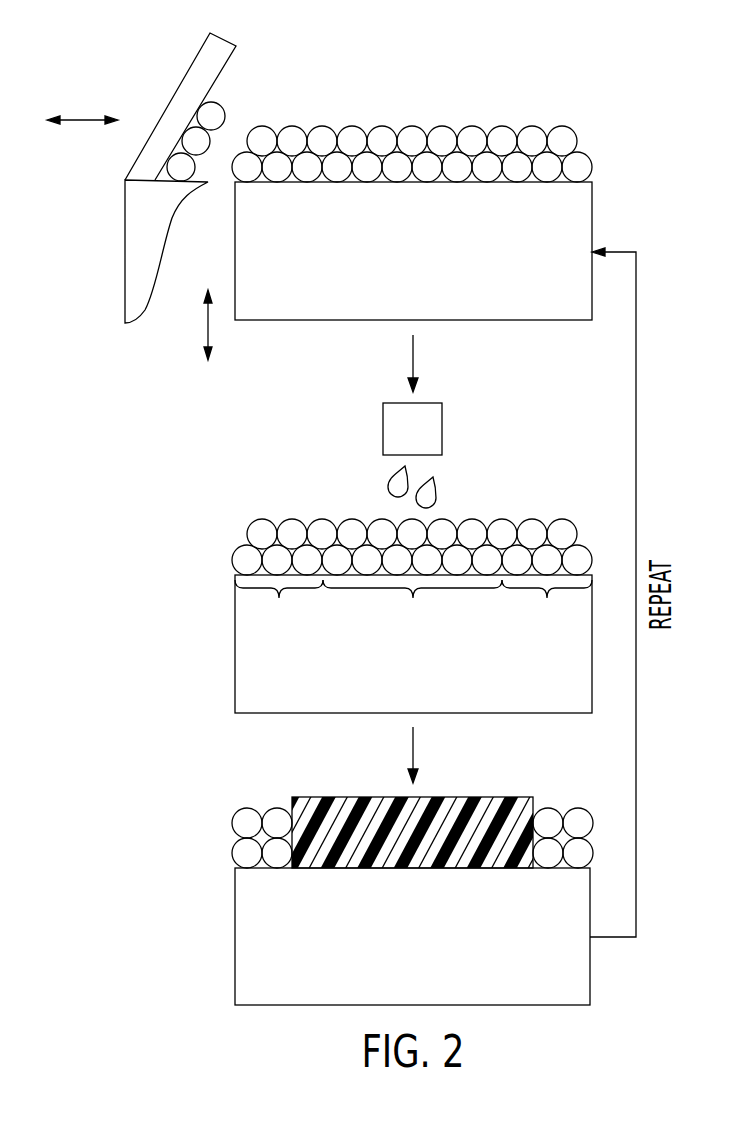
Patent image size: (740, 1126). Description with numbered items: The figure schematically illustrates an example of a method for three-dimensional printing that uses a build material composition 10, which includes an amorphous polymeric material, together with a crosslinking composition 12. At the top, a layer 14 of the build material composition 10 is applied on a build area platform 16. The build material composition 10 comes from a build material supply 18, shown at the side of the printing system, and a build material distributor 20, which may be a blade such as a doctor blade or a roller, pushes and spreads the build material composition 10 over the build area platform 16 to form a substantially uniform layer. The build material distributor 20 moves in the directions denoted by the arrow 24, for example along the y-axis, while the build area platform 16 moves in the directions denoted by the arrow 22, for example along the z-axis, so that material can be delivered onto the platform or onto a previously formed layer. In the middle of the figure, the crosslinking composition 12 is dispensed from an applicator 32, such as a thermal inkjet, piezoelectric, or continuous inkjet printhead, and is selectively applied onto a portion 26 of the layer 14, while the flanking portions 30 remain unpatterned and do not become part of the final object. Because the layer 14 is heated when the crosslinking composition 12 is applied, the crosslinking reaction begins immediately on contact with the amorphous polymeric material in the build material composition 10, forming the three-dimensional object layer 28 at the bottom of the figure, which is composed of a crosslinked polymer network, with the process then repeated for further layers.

The build material composition 10 is at (442, 140).
The crosslinking composition 12 is at (433, 497).
The layer 14 is at (610, 143).
The build area platform 16 is at (265, 298).
The build material supply 18 is at (140, 258).
The build material distributor 20 is at (205, 65).
The arrow 22 is at (208, 325).
The arrow 24 is at (81, 120).
The portion 26 is at (412, 605).
The 3D object layer 28 is at (540, 782).
The portions 30 is at (413, 605).
The applicator 32 is at (402, 430).